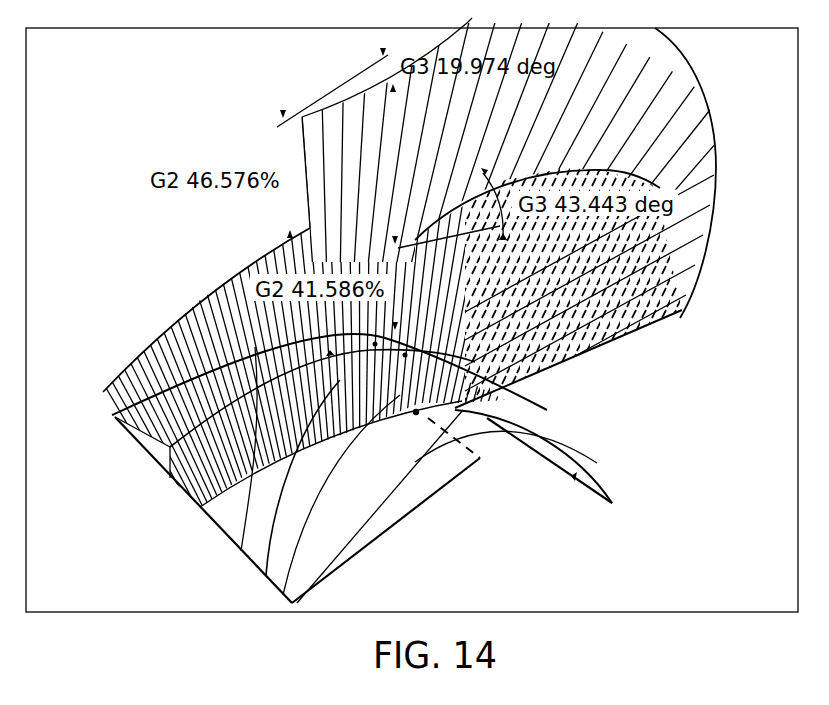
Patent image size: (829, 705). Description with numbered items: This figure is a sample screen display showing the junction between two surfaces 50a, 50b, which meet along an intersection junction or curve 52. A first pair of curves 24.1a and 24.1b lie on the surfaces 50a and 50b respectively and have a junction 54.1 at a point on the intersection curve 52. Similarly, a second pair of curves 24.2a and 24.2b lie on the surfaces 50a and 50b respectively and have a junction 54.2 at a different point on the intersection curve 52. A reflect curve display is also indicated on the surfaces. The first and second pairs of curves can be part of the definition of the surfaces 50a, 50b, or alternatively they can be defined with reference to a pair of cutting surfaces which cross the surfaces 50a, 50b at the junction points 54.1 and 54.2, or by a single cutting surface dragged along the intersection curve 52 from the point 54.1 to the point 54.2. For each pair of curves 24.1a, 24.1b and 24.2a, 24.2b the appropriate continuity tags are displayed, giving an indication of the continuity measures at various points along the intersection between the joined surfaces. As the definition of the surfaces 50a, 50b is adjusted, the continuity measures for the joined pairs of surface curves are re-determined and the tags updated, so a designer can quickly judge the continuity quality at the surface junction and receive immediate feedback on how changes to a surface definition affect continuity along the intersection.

The first curve of first pair 24.1a is at (176, 411).
The second curve of first pair 24.1b is at (525, 363).
The first curve of second pair 24.2a is at (240, 498).
The second curve of second pair 24.2b is at (484, 400).
The first surface 50a is at (334, 524).
The second surface 50b is at (576, 478).
The intersection curve 52 is at (486, 454).
The first junction point 54.1 is at (296, 343).
The second junction point 54.2 is at (418, 424).